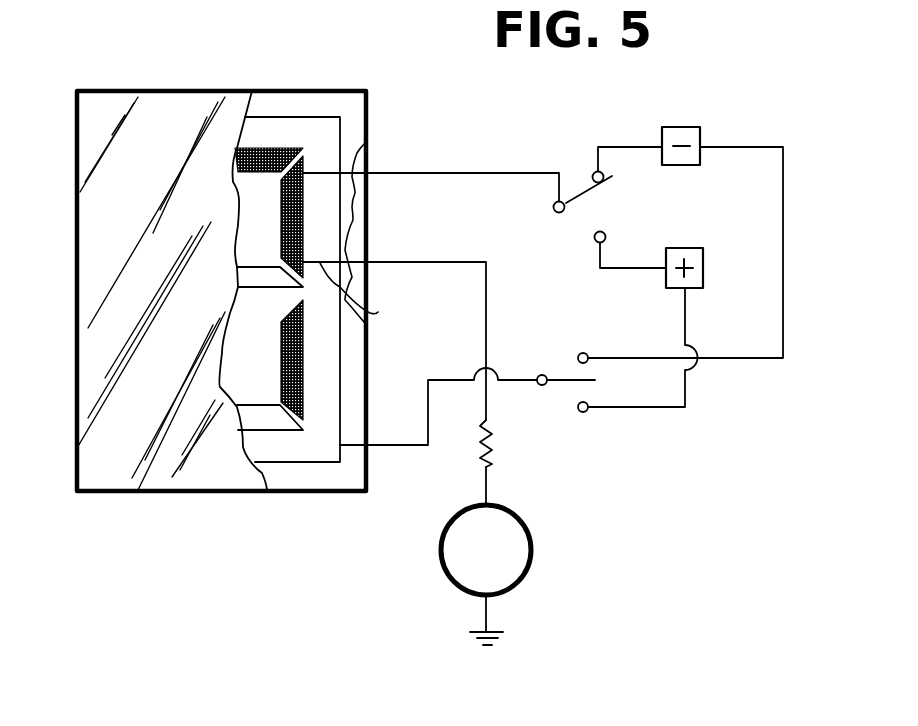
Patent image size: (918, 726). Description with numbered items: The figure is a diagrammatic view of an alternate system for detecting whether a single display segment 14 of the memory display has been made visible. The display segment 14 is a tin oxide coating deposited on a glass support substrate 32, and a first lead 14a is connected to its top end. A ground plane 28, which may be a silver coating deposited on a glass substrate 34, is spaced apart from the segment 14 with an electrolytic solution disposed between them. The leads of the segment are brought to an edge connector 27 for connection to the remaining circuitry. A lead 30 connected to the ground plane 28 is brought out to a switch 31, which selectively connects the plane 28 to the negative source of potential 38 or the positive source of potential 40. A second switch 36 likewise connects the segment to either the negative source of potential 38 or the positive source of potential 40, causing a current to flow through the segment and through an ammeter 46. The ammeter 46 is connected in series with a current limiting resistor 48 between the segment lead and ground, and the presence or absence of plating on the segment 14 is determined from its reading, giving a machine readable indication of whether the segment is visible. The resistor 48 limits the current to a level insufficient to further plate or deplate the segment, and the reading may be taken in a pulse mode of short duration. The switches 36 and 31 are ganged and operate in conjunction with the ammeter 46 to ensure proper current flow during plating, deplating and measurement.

The display segment 14 is at (277, 228).
The first lead 14a is at (319, 173).
The edge connector 27 is at (362, 224).
The ground plane 28 is at (318, 448).
The lead 30 is at (357, 445).
The switch 31 is at (558, 378).
The glass support substrate 32 is at (90, 297).
The glass substrate 34 is at (280, 480).
The switch 36 is at (567, 212).
The negative source of potential 38 is at (702, 153).
The positive source of potential 40 is at (703, 262).
The ammeter 46 is at (531, 558).
The current limiting resistor 48 is at (495, 452).